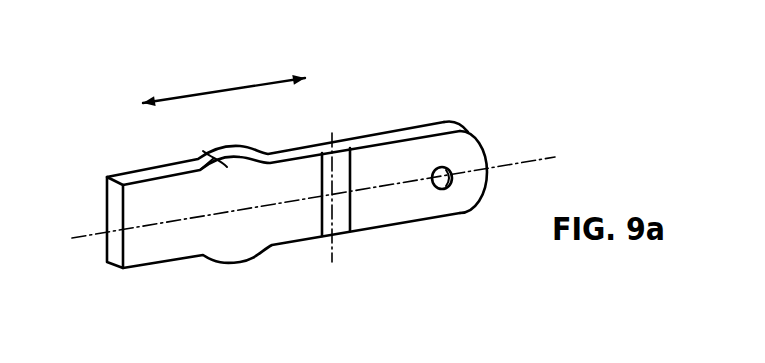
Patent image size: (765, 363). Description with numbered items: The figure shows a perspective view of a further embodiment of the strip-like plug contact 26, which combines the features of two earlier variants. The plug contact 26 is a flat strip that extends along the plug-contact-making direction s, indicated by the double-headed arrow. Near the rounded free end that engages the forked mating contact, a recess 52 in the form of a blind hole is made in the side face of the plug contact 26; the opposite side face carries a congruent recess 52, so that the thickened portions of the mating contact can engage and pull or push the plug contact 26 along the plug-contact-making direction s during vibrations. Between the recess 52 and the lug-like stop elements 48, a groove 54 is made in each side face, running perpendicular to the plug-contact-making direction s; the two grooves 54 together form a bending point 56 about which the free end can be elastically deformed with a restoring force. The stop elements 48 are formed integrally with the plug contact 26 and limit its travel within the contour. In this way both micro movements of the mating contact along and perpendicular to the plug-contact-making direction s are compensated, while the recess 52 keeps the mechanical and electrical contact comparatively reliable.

The stop element 48 is at (203, 151).
The plug contact 26 is at (442, 140).
The recess 52 is at (443, 189).
The groove 54 is at (322, 148).
The bending point 56 is at (345, 245).
The plug-contact-making direction s is at (211, 90).